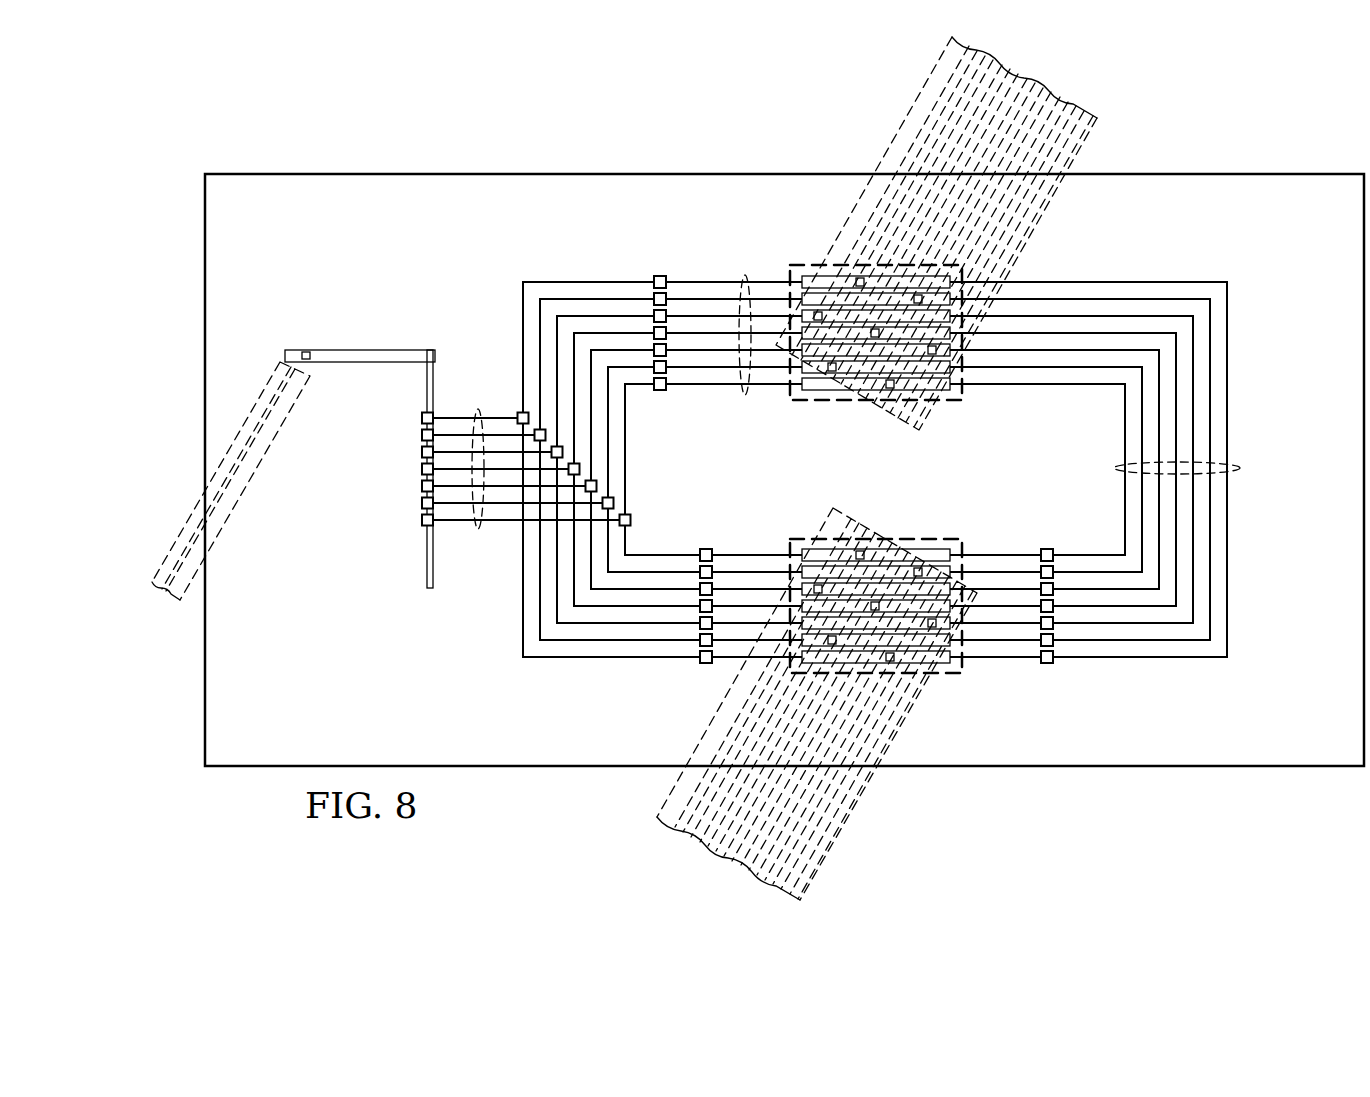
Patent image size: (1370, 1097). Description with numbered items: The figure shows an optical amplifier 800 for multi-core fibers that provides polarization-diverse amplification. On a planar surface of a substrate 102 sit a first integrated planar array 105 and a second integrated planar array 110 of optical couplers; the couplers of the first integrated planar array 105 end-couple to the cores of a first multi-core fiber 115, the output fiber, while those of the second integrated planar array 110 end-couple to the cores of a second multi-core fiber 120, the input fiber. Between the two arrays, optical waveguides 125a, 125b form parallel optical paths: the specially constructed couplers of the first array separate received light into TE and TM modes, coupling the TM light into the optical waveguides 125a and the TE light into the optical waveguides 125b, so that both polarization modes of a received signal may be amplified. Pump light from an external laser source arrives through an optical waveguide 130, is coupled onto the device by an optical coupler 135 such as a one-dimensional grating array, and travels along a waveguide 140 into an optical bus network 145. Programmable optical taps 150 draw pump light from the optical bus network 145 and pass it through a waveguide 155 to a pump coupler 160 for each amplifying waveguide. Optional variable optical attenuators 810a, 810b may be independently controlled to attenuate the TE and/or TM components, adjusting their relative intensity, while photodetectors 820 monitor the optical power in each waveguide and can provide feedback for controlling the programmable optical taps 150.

The optical amplifier 800 is at (523, 112).
The substrate 102 is at (1300, 712).
The first integrated planar array 105 is at (822, 401).
The second integrated planar array 110 is at (931, 536).
The first multi-core fiber 115 is at (894, 136).
The second multi-core fiber 120 is at (858, 802).
The optical waveguides 125a is at (745, 275).
The optical waveguides 125b is at (1236, 470).
The optical waveguide 130 is at (240, 497).
The optical coupler 135 is at (302, 354).
The waveguide 140 is at (376, 348).
The optical bus network 145 is at (425, 560).
The programmable optical taps 150 is at (420, 420).
The waveguide 155 is at (479, 528).
The pump coupler 160 is at (520, 410).
The variable optical attenuator 810a is at (706, 548).
The variable optical attenuator 810b is at (1053, 664).
The photodetectors 820 is at (660, 276).